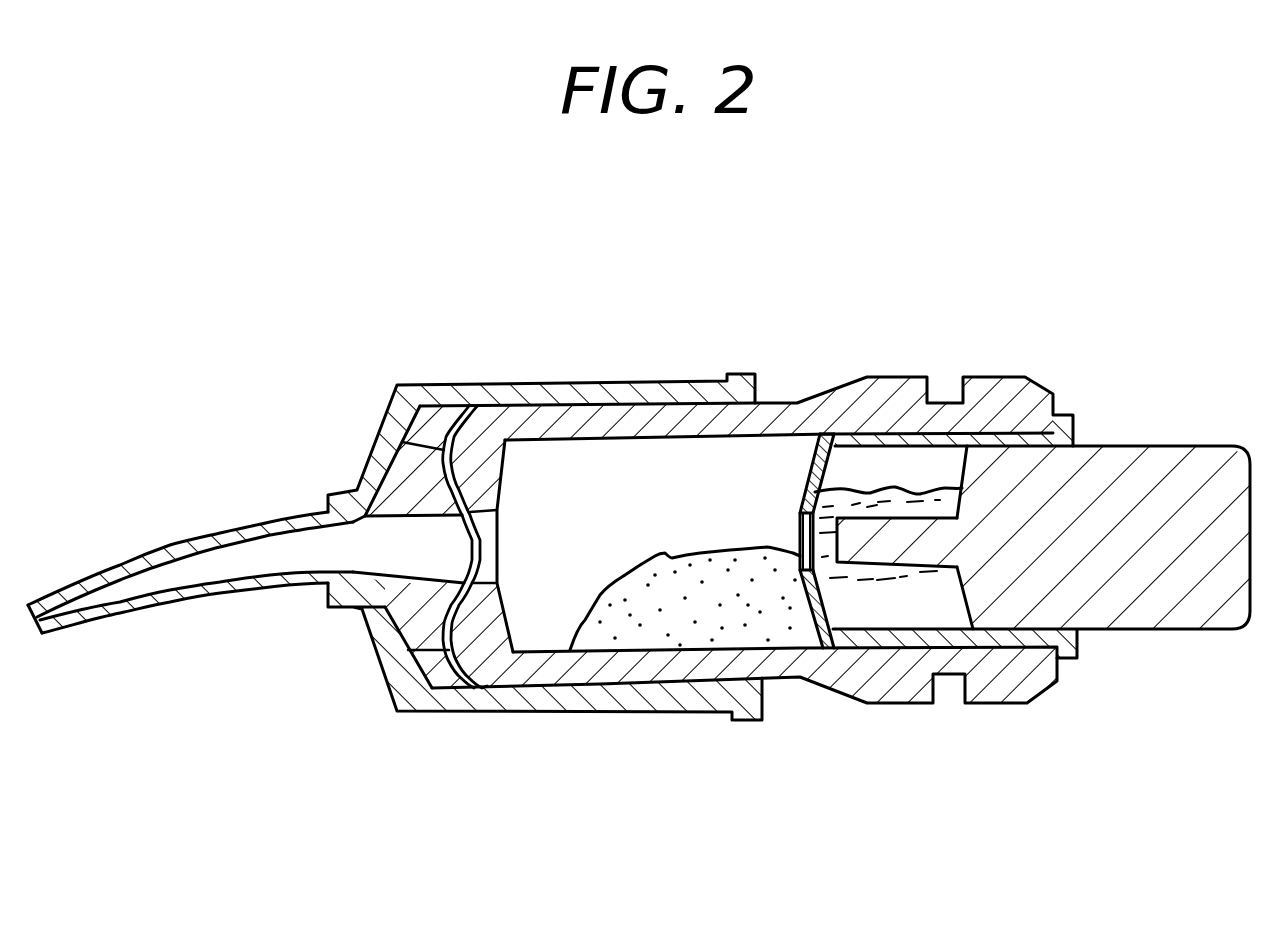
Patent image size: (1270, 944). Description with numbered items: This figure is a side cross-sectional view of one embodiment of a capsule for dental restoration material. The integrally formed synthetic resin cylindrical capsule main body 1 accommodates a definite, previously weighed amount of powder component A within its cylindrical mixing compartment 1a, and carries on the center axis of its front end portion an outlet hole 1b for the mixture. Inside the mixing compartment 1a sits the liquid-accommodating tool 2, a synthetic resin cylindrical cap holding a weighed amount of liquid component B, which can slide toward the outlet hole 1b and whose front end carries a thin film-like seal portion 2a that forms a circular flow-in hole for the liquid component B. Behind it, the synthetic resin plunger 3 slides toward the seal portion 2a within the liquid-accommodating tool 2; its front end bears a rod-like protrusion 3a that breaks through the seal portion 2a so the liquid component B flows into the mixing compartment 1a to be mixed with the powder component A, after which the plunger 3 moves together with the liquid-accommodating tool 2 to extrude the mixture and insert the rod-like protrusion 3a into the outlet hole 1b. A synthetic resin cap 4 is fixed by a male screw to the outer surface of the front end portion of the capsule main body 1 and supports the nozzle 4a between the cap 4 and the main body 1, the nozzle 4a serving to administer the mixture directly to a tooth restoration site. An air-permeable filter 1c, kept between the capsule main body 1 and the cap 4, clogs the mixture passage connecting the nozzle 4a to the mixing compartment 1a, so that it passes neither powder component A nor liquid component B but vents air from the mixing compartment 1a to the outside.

The capsule main body 1 is at (833, 403).
The cylindrical mixing compartment 1a is at (643, 467).
The outlet hole 1b is at (500, 540).
The air-permeable filter 1c is at (447, 437).
The liquid-accommodating tool 2 is at (797, 467).
The thin film-like seal portion 2a is at (800, 533).
The plunger 3 is at (1142, 570).
The rod-like protrusion 3a is at (920, 545).
The cap 4 is at (423, 713).
The nozzle 4a is at (240, 588).
The powder component A is at (677, 625).
The liquid component B is at (862, 600).